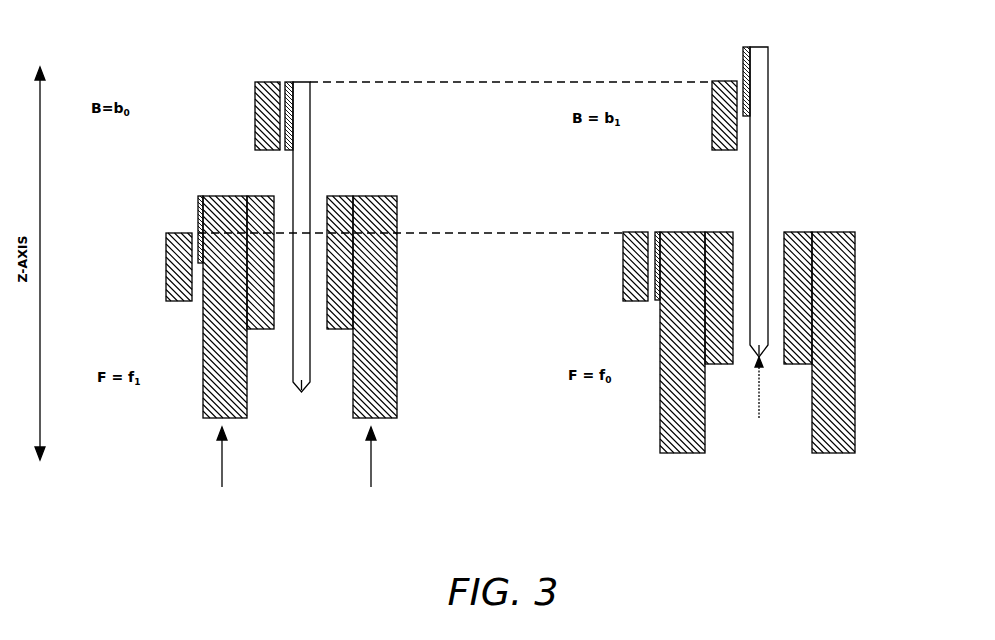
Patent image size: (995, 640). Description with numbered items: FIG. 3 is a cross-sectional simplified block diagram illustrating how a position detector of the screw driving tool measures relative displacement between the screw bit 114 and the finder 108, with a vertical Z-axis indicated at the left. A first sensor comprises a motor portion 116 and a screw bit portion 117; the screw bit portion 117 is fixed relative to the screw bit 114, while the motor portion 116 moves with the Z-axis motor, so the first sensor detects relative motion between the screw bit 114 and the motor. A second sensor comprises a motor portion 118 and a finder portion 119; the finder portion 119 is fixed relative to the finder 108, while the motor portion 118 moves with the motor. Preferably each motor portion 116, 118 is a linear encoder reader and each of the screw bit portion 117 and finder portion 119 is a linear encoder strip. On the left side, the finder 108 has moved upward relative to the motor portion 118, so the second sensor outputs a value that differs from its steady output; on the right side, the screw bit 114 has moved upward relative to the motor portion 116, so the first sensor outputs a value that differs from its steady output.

The finder 108 is at (226, 196).
The screw bit 114 is at (310, 161).
The motor portion 116 is at (255, 110).
The screw bit portion 117 is at (287, 82).
The motor portion 118 is at (166, 268).
The finder portion 119 is at (199, 220).